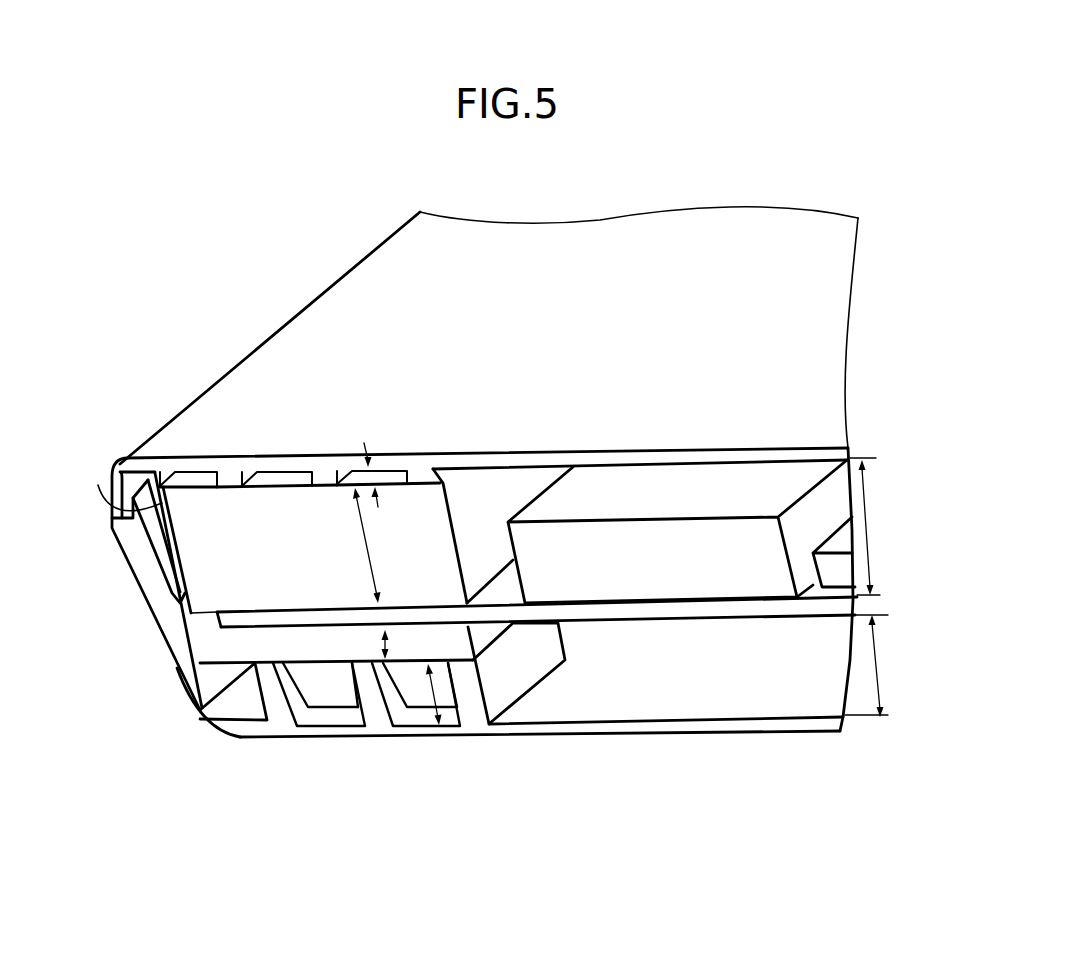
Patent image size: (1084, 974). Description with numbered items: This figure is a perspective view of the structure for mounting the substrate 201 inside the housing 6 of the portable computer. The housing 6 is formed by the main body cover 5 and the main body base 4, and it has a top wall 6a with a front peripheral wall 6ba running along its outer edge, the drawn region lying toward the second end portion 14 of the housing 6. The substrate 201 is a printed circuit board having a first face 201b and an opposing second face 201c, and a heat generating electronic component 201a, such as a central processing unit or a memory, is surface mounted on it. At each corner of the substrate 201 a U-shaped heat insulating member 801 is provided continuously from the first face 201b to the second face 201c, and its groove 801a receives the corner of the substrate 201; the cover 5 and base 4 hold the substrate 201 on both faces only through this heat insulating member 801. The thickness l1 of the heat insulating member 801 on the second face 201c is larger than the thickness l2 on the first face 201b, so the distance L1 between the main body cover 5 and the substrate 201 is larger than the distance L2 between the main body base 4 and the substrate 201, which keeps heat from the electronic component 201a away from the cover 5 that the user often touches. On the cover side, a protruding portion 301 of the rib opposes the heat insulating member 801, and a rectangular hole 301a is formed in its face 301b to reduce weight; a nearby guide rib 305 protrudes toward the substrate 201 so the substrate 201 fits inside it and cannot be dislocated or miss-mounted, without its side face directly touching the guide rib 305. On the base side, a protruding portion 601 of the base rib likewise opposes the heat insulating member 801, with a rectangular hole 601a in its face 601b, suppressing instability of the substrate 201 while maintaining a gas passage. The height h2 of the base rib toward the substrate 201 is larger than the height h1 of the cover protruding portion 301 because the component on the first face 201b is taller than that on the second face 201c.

The main body base 4 is at (447, 740).
The main body cover 5 is at (325, 337).
The housing 6 is at (357, 262).
The top wall 6a is at (163, 441).
The front peripheral wall 6ba is at (124, 558).
The second end portion 14 is at (166, 668).
The substrate 201 is at (600, 612).
The electronic component 201a is at (838, 540).
The first face 201b is at (703, 620).
The second face 201c is at (813, 592).
The protruding portion 301 is at (228, 486).
The rectangular hole 301a is at (350, 489).
The face 301b is at (417, 483).
The guide rib 305 is at (98, 485).
The protruding portion 601 is at (378, 700).
The rectangular hole 601a is at (318, 688).
The face 601b is at (458, 660).
The heat insulating member 801 is at (340, 644).
The groove 801a is at (216, 633).
The height of the protruding portions h1 is at (385, 480).
The height of the rib h2 is at (442, 692).
The thickness of the heat insulating member l1 is at (369, 545).
The thickness of the heat insulating member l2 is at (391, 644).
The distance between the main body cover and the substrate L1 is at (871, 527).
The distance between the main body base and the substrate L2 is at (876, 666).